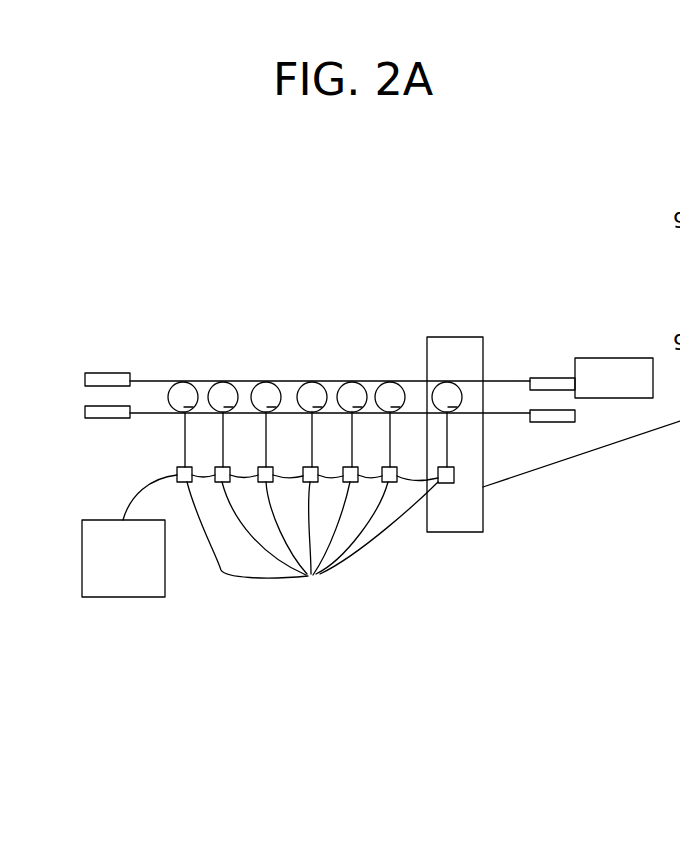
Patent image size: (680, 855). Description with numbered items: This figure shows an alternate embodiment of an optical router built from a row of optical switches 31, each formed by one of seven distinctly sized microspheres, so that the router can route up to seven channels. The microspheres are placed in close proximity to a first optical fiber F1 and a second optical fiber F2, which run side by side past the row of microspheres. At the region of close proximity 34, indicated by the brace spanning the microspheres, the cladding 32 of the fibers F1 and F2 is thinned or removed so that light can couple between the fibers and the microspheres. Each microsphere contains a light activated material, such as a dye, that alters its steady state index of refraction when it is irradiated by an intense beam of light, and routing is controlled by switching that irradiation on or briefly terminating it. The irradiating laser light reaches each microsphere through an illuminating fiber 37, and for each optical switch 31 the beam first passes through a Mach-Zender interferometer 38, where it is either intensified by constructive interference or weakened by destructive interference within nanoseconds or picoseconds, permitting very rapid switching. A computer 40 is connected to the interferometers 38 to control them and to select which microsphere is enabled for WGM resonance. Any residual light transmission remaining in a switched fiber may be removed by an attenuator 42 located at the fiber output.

The optical switch 31 is at (488, 517).
The cladding 32 is at (104, 372).
The region of close proximity 34 is at (517, 295).
The illuminating fiber 37 is at (186, 440).
The Mach-Zender interferometer 38 is at (177, 482).
The computer 40 is at (129, 570).
The attenuator 42 is at (621, 389).
The first optical fiber F1 is at (85, 378).
The second optical fiber F2 is at (85, 412).